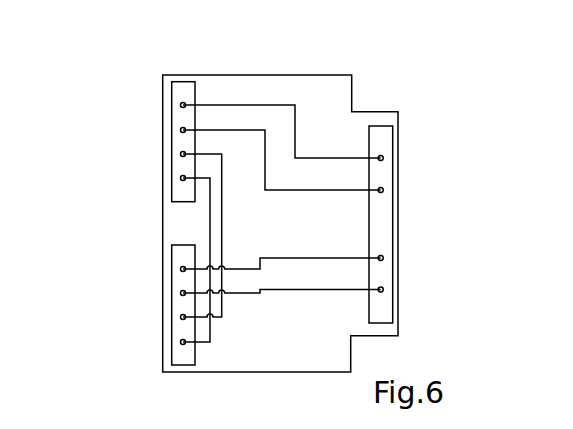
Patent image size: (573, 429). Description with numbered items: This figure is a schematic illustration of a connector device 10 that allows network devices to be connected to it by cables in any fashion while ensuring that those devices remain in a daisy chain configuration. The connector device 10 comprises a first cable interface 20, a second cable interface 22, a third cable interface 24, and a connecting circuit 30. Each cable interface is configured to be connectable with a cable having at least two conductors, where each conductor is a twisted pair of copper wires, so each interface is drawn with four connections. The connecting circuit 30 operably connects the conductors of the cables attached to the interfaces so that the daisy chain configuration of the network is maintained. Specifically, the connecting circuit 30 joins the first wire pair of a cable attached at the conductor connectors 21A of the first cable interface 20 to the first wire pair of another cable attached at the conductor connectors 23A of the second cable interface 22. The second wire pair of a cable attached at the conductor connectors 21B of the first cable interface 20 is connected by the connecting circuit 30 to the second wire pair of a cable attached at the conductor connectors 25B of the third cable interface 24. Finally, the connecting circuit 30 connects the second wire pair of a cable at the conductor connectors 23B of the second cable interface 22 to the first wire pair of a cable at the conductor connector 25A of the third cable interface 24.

The connector device 10 is at (327, 75).
The connecting circuit 30 is at (342, 158).
The first cable interface 20 is at (172, 143).
The conductor connectors of the first cable interface 21A is at (180, 105).
The conductor connectors of the first cable interface 21B is at (180, 154).
The second cable interface 22 is at (393, 227).
The conductor connectors of the second cable interface 23A is at (383, 158).
The conductor connectors of the second cable interface 23B is at (383, 258).
The third cable interface 24 is at (172, 303).
The conductor connector of the third cable interface 25A is at (180, 269).
The conductor connectors of the third cable interface 25B is at (180, 317).